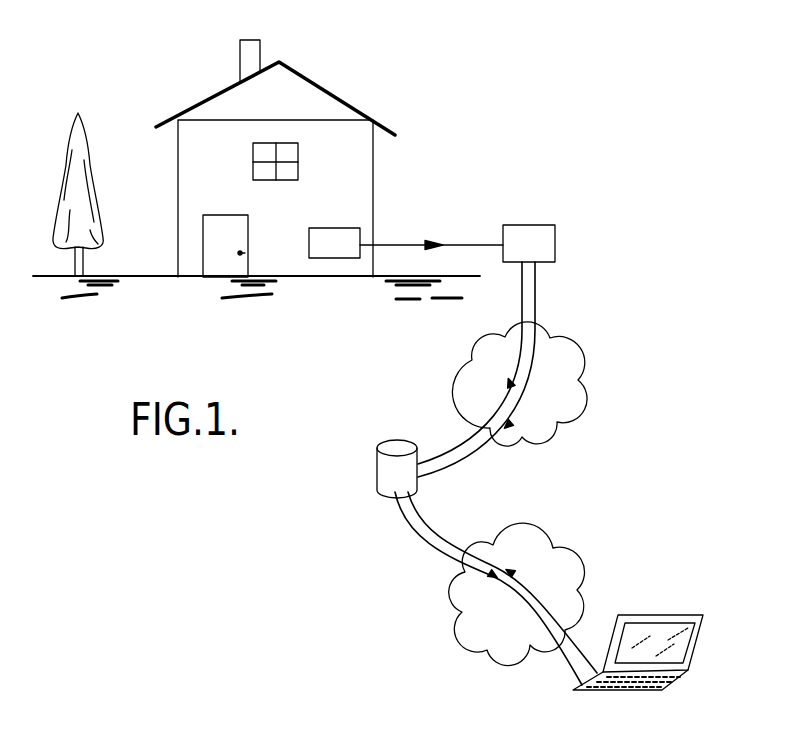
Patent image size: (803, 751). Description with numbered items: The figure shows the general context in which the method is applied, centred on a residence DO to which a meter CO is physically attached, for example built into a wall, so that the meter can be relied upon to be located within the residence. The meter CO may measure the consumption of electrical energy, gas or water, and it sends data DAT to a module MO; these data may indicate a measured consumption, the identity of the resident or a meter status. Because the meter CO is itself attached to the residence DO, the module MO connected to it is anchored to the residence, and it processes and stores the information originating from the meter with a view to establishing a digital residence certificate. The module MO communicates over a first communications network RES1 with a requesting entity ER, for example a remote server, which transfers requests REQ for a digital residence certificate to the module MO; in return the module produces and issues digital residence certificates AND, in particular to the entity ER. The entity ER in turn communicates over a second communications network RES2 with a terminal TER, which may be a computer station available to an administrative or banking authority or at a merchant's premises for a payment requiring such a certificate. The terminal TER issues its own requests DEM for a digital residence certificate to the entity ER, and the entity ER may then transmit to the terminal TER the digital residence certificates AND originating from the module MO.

The residence DO is at (328, 92).
The meter CO is at (338, 228).
The data DAT is at (452, 243).
The module MO is at (533, 223).
The communications network RES1 is at (588, 347).
The request REQ is at (465, 447).
The digital residence certificate AND is at (473, 460).
The requesting entity ER is at (377, 470).
The request DEM is at (438, 534).
The communications network RES2 is at (573, 557).
The terminal TER is at (610, 692).